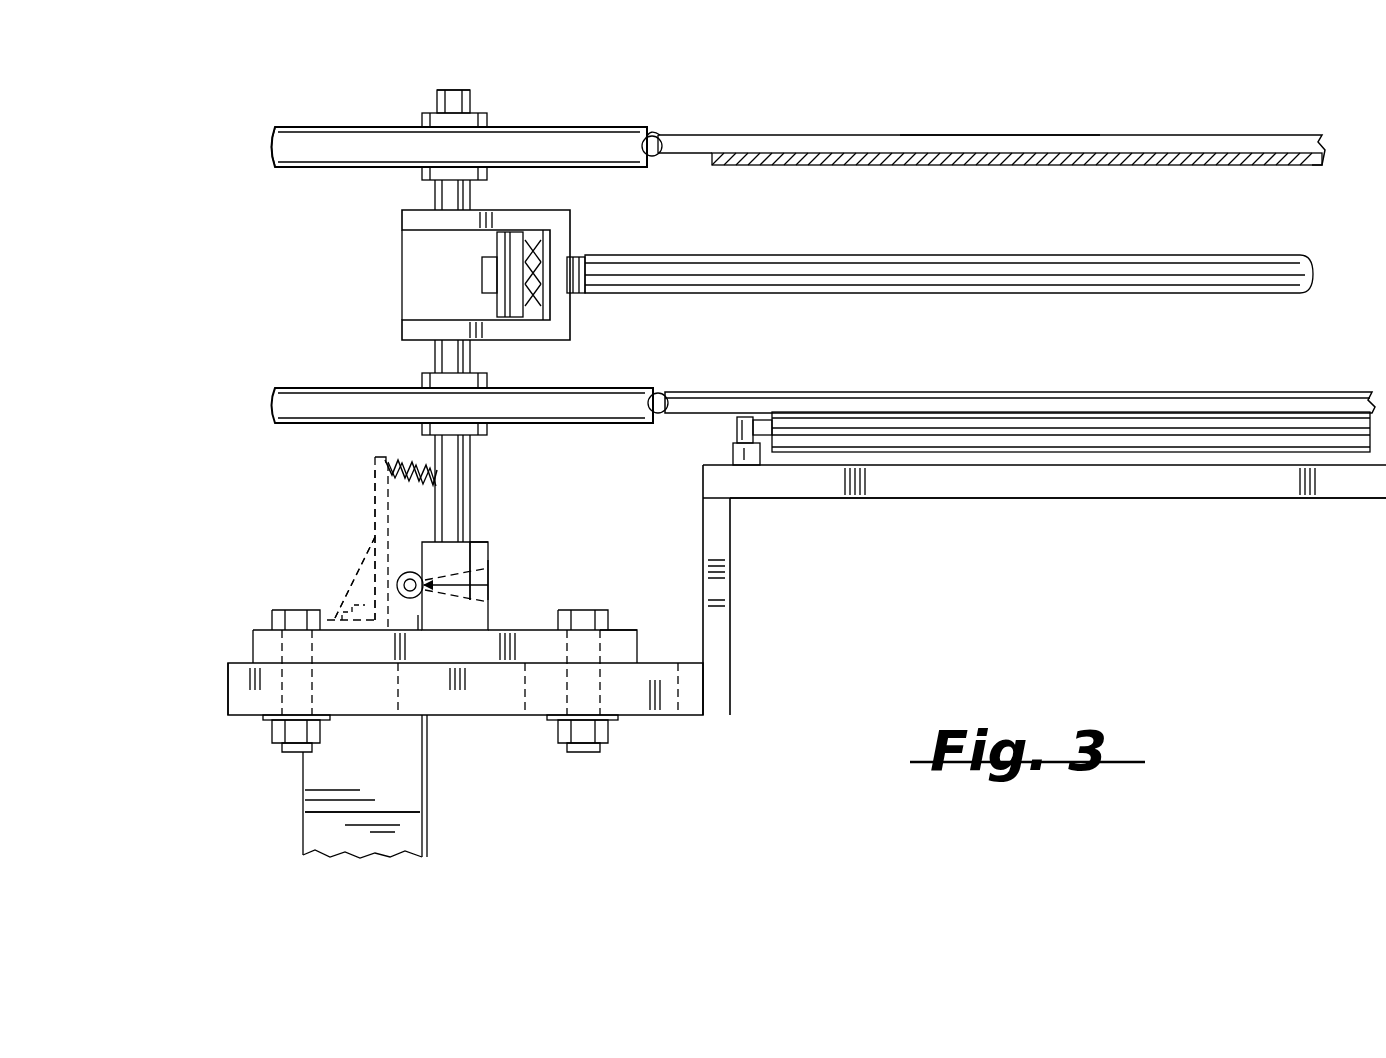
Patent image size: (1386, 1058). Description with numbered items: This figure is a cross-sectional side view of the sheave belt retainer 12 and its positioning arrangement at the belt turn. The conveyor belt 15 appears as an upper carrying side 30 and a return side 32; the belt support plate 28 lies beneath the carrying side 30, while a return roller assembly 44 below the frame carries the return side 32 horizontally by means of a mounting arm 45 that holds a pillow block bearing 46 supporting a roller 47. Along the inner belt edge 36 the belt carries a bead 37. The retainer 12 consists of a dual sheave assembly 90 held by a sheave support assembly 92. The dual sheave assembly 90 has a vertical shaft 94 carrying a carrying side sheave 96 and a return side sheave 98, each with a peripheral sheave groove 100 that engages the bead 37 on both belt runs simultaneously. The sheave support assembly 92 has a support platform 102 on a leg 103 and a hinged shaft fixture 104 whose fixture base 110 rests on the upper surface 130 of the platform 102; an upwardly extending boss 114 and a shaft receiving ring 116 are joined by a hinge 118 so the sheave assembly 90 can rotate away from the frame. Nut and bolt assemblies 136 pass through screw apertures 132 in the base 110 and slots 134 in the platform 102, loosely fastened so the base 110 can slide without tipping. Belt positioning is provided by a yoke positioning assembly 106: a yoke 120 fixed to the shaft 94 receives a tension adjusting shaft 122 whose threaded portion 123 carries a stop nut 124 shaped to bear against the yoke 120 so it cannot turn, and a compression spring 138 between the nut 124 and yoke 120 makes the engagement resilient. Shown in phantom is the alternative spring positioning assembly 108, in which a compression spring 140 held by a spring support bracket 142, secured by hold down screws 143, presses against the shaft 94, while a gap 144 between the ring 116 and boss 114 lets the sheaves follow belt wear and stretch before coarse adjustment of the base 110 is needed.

The sheave belt retainer 12 is at (602, 75).
The conveyor belt 15 is at (965, 132).
The belt support plate 28 is at (1000, 160).
The upper carrying side 30 is at (790, 135).
The return side 32 is at (992, 408).
The inner belt edge 36 is at (665, 138).
The bead 37 is at (652, 137).
The return roller assembly 44 is at (1000, 530).
The mounting arm 45 is at (1065, 500).
The pillow block bearing 46 is at (735, 445).
The roller 47 is at (1140, 448).
The dual sheave assembly 90 is at (245, 245).
The sheave support assembly 92 is at (225, 625).
The vertical shaft 94 is at (455, 90).
The carrying side sheave 96 is at (528, 128).
The return side sheave 98 is at (356, 388).
The sheave groove 100 is at (268, 147).
The support platform 102 is at (700, 718).
The leg 103 is at (430, 815).
The hinged shaft fixture 104 is at (620, 622).
The yoke positioning assembly 106 is at (638, 218).
The spring positioning assembly 108 is at (348, 548).
The fixture base 110 is at (508, 600).
The upwardly extending boss 114 is at (545, 615).
The shaft receiving ring 116 is at (490, 570).
The hinge 118 is at (408, 568).
The yoke 120 is at (505, 218).
The tension adjusting shaft 122 is at (778, 262).
The threaded portion 123 is at (580, 270).
The stop nut 124 is at (510, 318).
The upper surface 130 is at (640, 660).
The screw apertures 132 is at (300, 718).
The slots 134 is at (400, 690).
The nut and bolt assemblies 136 is at (585, 610).
The compression spring 138 is at (546, 322).
The compression spring 140 is at (400, 468).
The spring support bracket 142 is at (375, 472).
The hold down screws 143 is at (358, 578).
The gap 144 is at (490, 575).